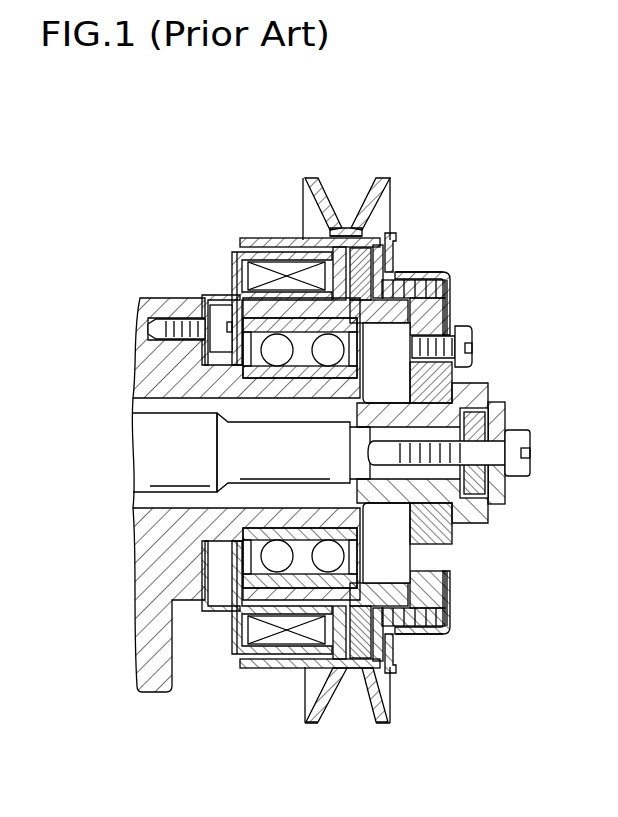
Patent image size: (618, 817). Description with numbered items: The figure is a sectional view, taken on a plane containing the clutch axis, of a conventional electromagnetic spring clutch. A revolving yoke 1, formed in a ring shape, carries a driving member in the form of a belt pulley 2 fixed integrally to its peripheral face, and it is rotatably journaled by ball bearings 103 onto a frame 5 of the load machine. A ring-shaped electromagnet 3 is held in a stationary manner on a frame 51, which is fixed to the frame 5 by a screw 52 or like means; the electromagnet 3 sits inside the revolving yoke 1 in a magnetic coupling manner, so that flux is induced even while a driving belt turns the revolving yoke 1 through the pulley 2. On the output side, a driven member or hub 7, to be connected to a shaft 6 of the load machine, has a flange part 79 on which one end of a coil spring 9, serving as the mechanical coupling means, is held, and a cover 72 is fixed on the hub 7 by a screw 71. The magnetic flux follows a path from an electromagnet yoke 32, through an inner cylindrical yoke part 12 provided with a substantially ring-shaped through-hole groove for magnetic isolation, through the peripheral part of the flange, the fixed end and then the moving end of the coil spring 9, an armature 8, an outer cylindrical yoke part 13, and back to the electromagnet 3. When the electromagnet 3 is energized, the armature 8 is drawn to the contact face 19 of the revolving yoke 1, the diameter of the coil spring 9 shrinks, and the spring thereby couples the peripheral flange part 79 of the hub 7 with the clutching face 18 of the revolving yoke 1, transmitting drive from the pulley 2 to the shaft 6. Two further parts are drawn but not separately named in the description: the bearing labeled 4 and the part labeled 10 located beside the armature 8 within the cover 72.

The revolving yoke 1 is at (247, 240).
The belt pulley 2 is at (306, 180).
The electromagnet 3 is at (236, 270).
The bearing 4 is at (272, 556).
The frame of the load machine 5 is at (148, 370).
The shaft 6 is at (166, 442).
The driven member 7 is at (476, 383).
The armature 8 is at (393, 250).
The coil spring 9 is at (448, 272).
The armature hub 10 is at (418, 280).
The inner cylindrical yoke part 12 is at (352, 278).
The outer cylindrical yoke part 13 is at (258, 240).
The clutching face 18 is at (388, 318).
The contact face 19 is at (356, 236).
The electromagnet yoke 32 is at (338, 260).
The frame 51 is at (231, 290).
The screw 52 is at (175, 316).
The screw 71 is at (466, 328).
The cover 72 is at (452, 277).
The flange part 79 is at (451, 304).
The ball bearings 103 is at (228, 296).